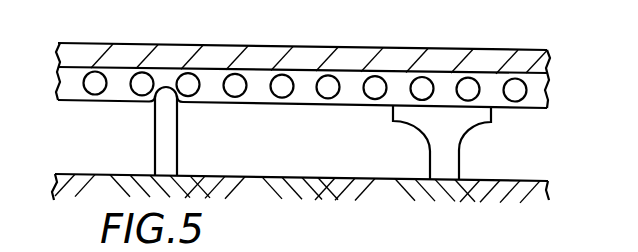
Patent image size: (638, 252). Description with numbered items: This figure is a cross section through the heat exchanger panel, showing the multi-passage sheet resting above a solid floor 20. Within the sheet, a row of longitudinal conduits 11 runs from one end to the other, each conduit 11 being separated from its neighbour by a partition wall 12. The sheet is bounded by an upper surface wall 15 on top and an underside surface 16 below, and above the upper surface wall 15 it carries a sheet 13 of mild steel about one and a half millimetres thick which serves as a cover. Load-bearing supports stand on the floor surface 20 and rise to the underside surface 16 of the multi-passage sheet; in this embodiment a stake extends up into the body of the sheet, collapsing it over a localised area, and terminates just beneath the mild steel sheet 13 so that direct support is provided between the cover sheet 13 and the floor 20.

The longitudinal conduit 11 is at (280, 82).
The partition wall 12 is at (302, 82).
The sheet of mild steel 13 is at (240, 63).
The upper surface wall 15 is at (412, 68).
The underside surface 16 is at (390, 108).
The solid floor 20 is at (466, 182).